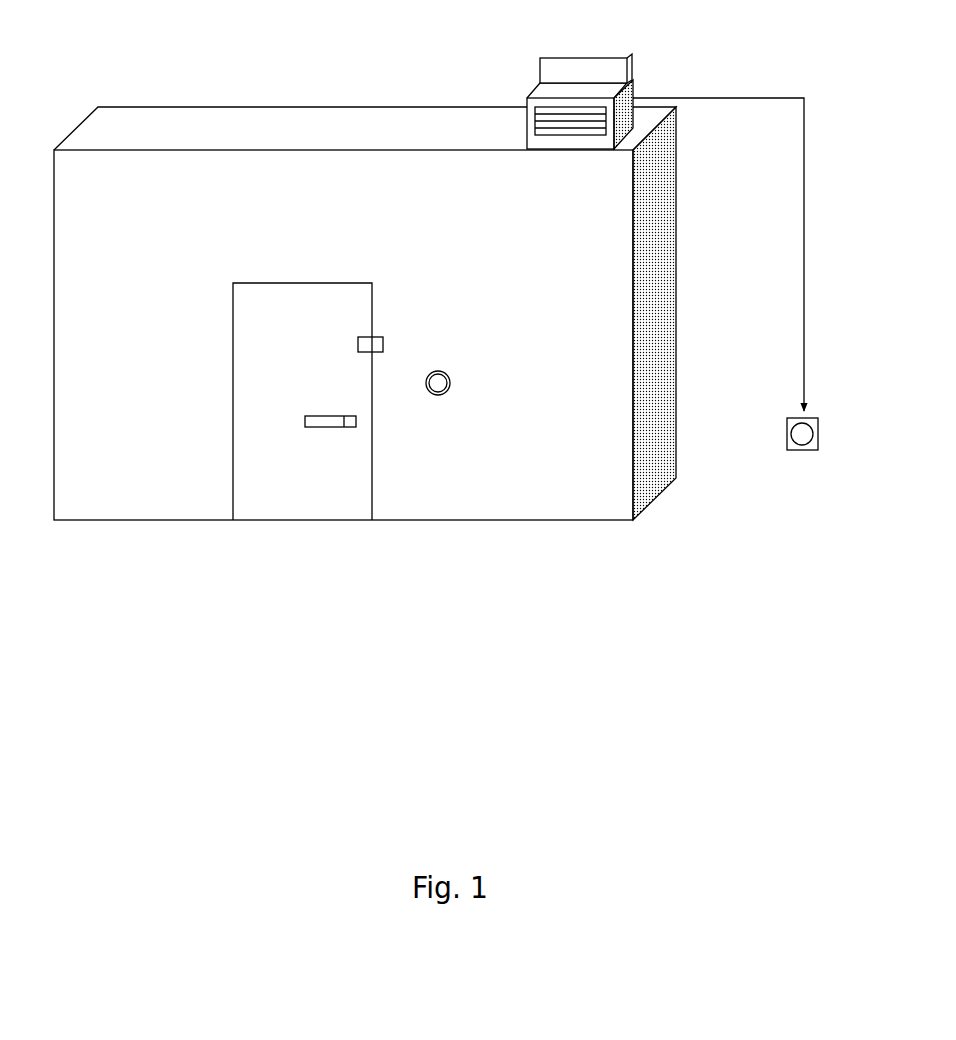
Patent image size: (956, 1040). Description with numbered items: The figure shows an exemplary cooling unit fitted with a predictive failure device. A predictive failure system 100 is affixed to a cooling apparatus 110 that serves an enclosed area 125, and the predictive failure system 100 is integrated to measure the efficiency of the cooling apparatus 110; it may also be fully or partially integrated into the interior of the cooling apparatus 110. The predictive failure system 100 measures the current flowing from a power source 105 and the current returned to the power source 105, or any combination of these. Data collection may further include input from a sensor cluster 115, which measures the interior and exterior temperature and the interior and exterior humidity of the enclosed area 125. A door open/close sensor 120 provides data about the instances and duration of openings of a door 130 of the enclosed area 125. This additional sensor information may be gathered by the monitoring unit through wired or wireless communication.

The predictive failure system 100 is at (588, 50).
The power source 105 is at (780, 434).
The cooling apparatus 110 is at (519, 128).
The sensor cluster 115 is at (438, 404).
The door open/close sensor 120 is at (377, 360).
The enclosed area 125 is at (344, 141).
The door 130 is at (299, 529).